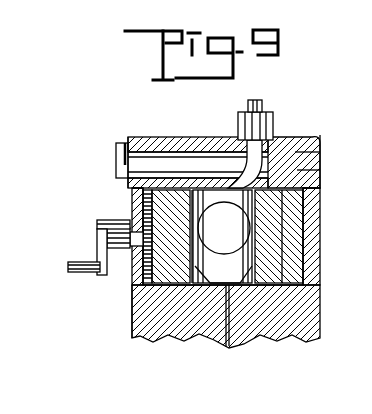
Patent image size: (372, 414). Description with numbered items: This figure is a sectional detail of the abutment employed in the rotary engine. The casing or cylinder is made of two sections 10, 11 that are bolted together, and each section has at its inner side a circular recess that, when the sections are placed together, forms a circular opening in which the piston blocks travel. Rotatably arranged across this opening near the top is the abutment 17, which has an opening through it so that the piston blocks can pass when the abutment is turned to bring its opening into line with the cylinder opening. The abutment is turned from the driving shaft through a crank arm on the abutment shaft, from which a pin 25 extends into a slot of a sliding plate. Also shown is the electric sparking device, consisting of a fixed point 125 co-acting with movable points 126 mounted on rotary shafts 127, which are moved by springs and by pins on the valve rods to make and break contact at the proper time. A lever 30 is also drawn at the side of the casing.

The casing section 10 is at (322, 288).
The casing section 11 is at (132, 309).
The abutment 17 is at (320, 205).
The pin 25 is at (274, 116).
The crank lever 30 is at (83, 272).
The fixed point 125 is at (297, 137).
The points 126 is at (320, 152).
The rotary shafts 127 is at (320, 170).